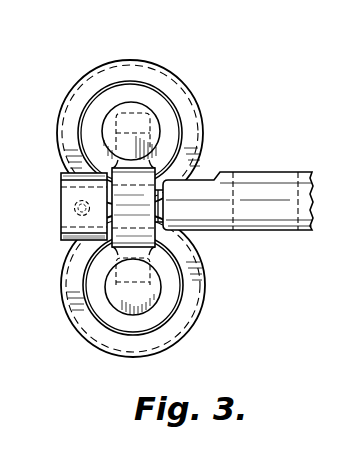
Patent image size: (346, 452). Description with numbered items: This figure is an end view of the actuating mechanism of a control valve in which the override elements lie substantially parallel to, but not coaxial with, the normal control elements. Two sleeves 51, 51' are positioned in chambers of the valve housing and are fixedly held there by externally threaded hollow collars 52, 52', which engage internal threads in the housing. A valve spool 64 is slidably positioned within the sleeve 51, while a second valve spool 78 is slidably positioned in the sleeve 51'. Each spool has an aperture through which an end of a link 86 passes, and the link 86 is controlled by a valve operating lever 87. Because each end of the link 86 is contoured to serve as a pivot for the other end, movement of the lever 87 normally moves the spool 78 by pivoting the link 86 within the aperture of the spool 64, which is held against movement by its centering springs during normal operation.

The externally threaded hollow collar 52 is at (130, 125).
The sleeve 51 is at (156, 133).
The valve spool 64 is at (128, 117).
The externally threaded hollow collar 52' is at (140, 286).
The sleeve 51' is at (157, 285).
The valve spool 78 is at (132, 302).
The link 86 is at (127, 192).
The valve operating lever 87 is at (212, 232).